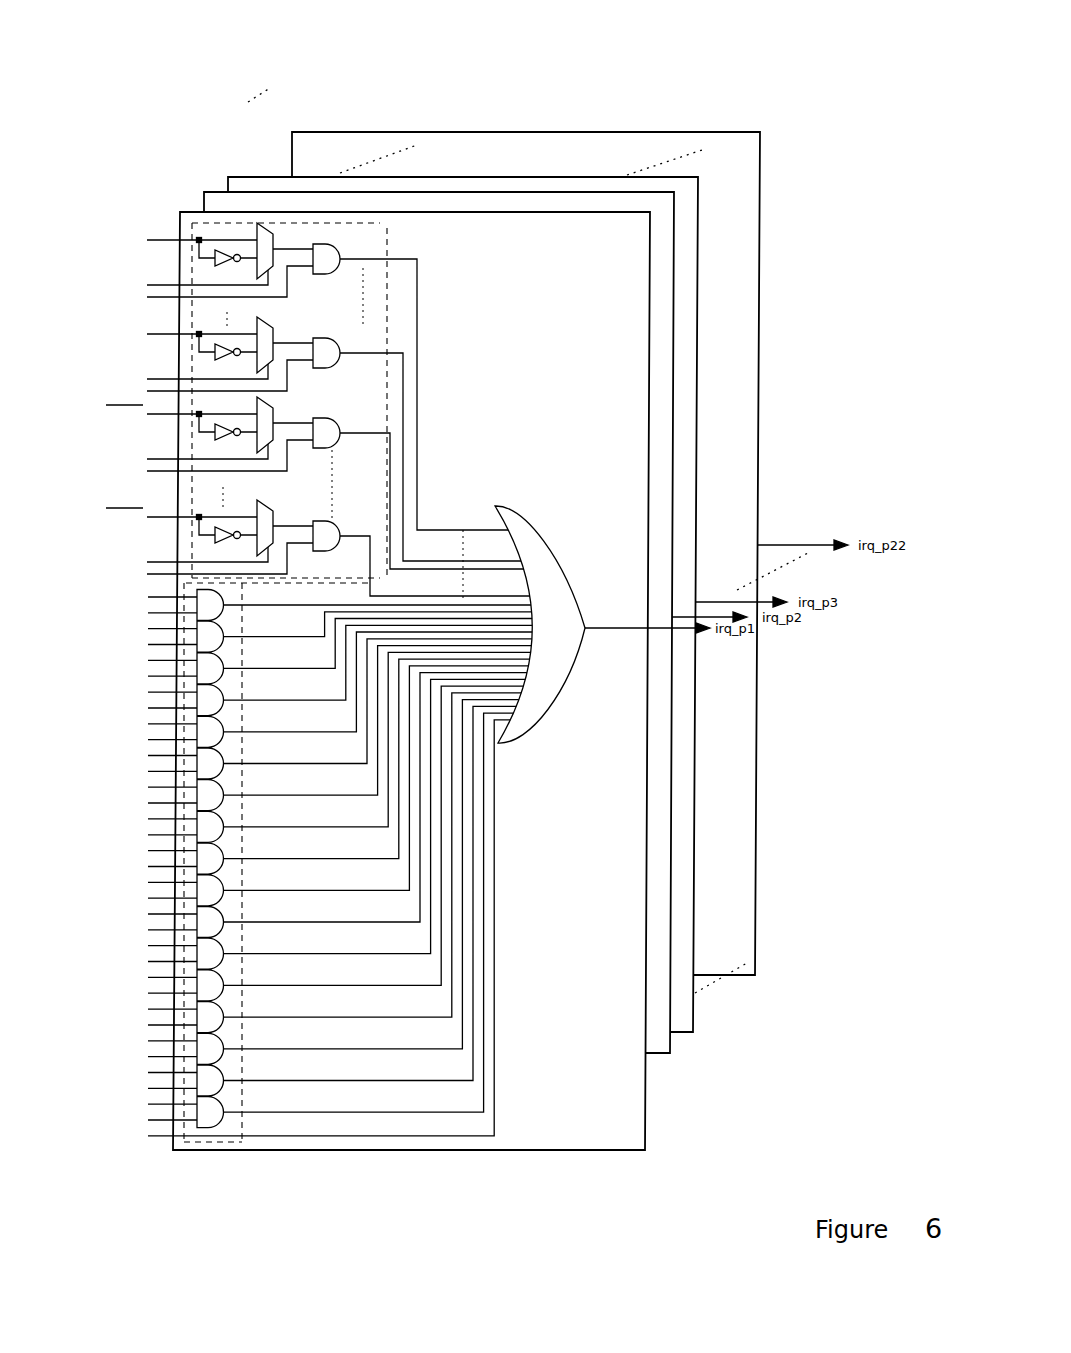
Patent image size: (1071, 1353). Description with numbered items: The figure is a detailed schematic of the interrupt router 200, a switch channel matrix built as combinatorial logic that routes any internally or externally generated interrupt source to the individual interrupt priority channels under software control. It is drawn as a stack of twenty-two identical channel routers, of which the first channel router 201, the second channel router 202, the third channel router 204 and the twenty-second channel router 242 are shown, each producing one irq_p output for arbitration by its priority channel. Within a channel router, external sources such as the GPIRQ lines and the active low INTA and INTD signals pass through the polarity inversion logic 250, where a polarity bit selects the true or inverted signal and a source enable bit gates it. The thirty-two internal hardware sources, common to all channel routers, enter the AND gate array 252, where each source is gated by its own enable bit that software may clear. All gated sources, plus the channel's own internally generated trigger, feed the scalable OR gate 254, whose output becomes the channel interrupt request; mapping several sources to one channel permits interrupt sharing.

The interrupt router 200 is at (625, 52).
The channel 1 router 201 is at (184, 208).
The channel 2 router 202 is at (227, 188).
The channel 3 router 204 is at (263, 175).
The channel 22 router 242 is at (317, 132).
The polarity inversion logic 250 is at (393, 303).
The AND gate array 252 is at (205, 1146).
The scalable OR gate 254 is at (542, 518).